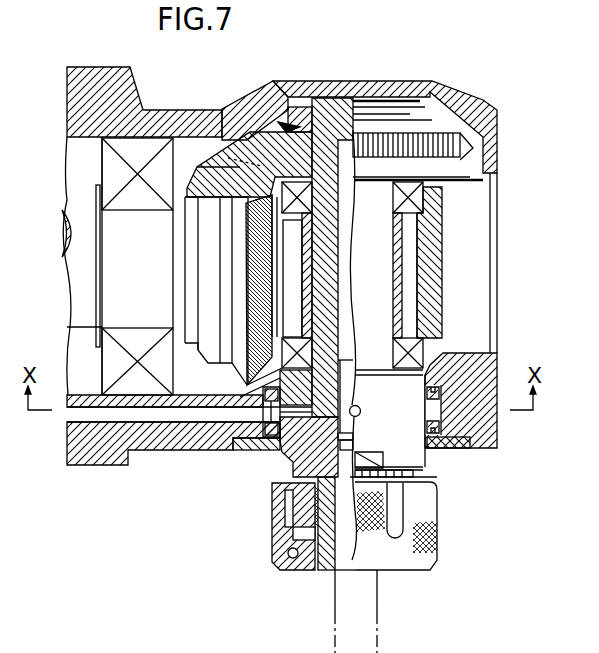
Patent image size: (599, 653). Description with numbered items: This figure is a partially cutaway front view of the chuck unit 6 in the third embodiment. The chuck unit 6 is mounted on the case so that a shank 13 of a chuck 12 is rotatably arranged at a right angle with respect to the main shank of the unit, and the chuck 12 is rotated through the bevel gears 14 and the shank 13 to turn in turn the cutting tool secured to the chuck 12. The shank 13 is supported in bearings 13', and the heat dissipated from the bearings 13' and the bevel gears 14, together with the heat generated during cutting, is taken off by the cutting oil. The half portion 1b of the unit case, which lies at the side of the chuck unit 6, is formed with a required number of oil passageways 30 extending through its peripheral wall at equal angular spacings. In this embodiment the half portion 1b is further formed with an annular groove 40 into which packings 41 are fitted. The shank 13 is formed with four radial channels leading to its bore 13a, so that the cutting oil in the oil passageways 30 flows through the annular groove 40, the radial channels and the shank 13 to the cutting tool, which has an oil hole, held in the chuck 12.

The half portion 1b is at (100, 77).
The bore 13a is at (345, 192).
The bevel gears 14 is at (400, 162).
The bearings 13' is at (467, 257).
The chuck unit 6 is at (500, 243).
The shank 13 is at (444, 345).
The oil passageways 30 is at (118, 422).
The annular groove 40 is at (262, 416).
The packings 41 is at (440, 448).
The chuck 12 is at (437, 548).